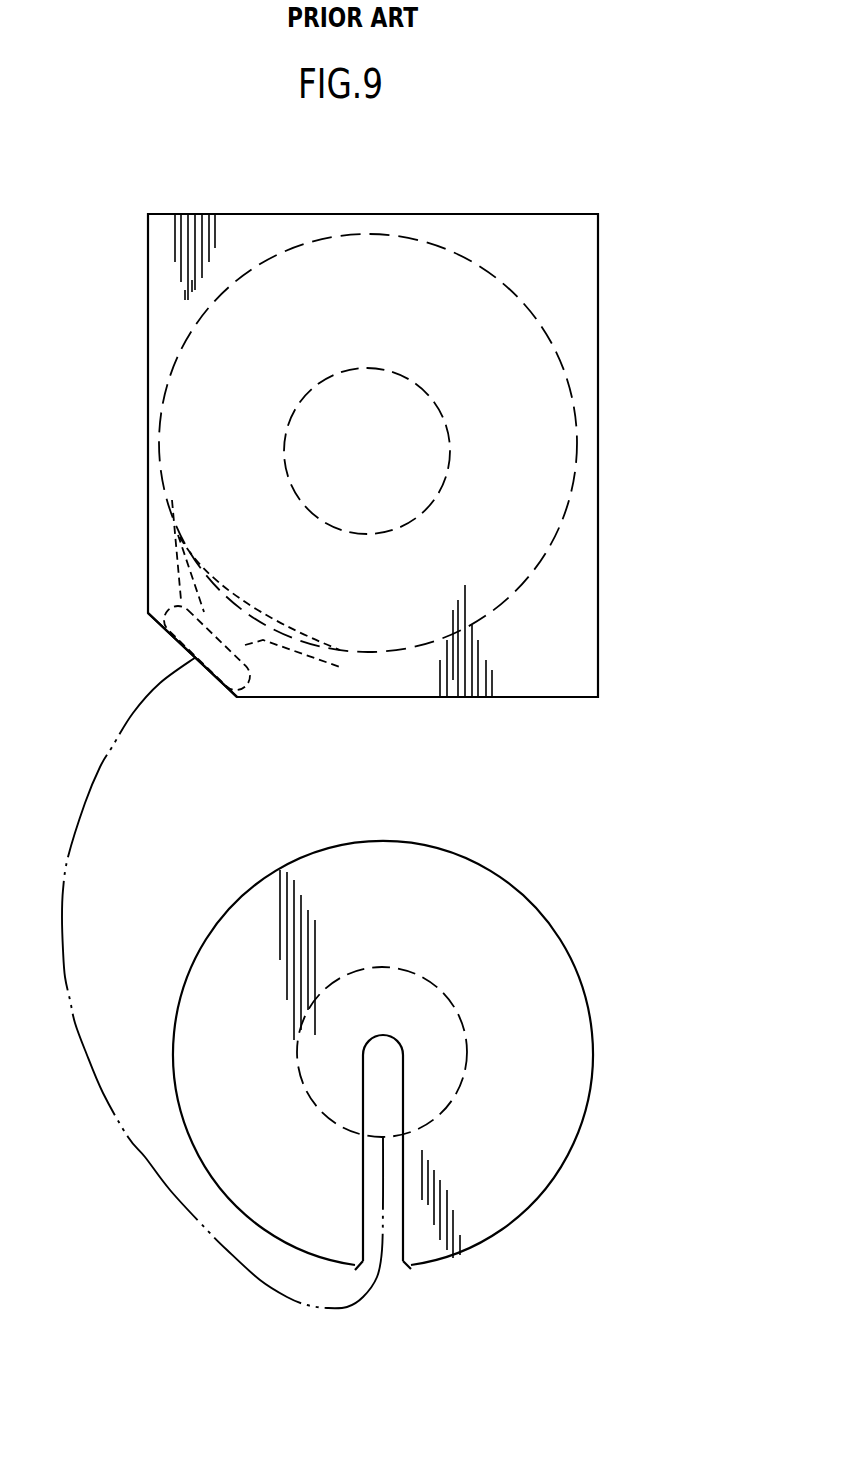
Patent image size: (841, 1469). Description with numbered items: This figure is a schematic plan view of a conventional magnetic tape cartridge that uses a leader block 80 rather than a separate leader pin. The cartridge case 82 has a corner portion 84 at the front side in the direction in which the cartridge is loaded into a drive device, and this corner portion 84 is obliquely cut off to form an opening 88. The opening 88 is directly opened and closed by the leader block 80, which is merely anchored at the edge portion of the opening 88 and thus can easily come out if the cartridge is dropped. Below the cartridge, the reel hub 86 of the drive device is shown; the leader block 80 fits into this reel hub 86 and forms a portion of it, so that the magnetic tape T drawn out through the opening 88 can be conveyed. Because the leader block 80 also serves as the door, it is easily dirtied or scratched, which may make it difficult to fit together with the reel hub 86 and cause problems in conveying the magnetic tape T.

The cartridge case 82 is at (598, 345).
The leader block 80 is at (213, 627).
The corner portion 84 is at (156, 628).
The opening 88 is at (238, 688).
The magnetic tape T is at (84, 802).
The reel hub 86 is at (430, 975).